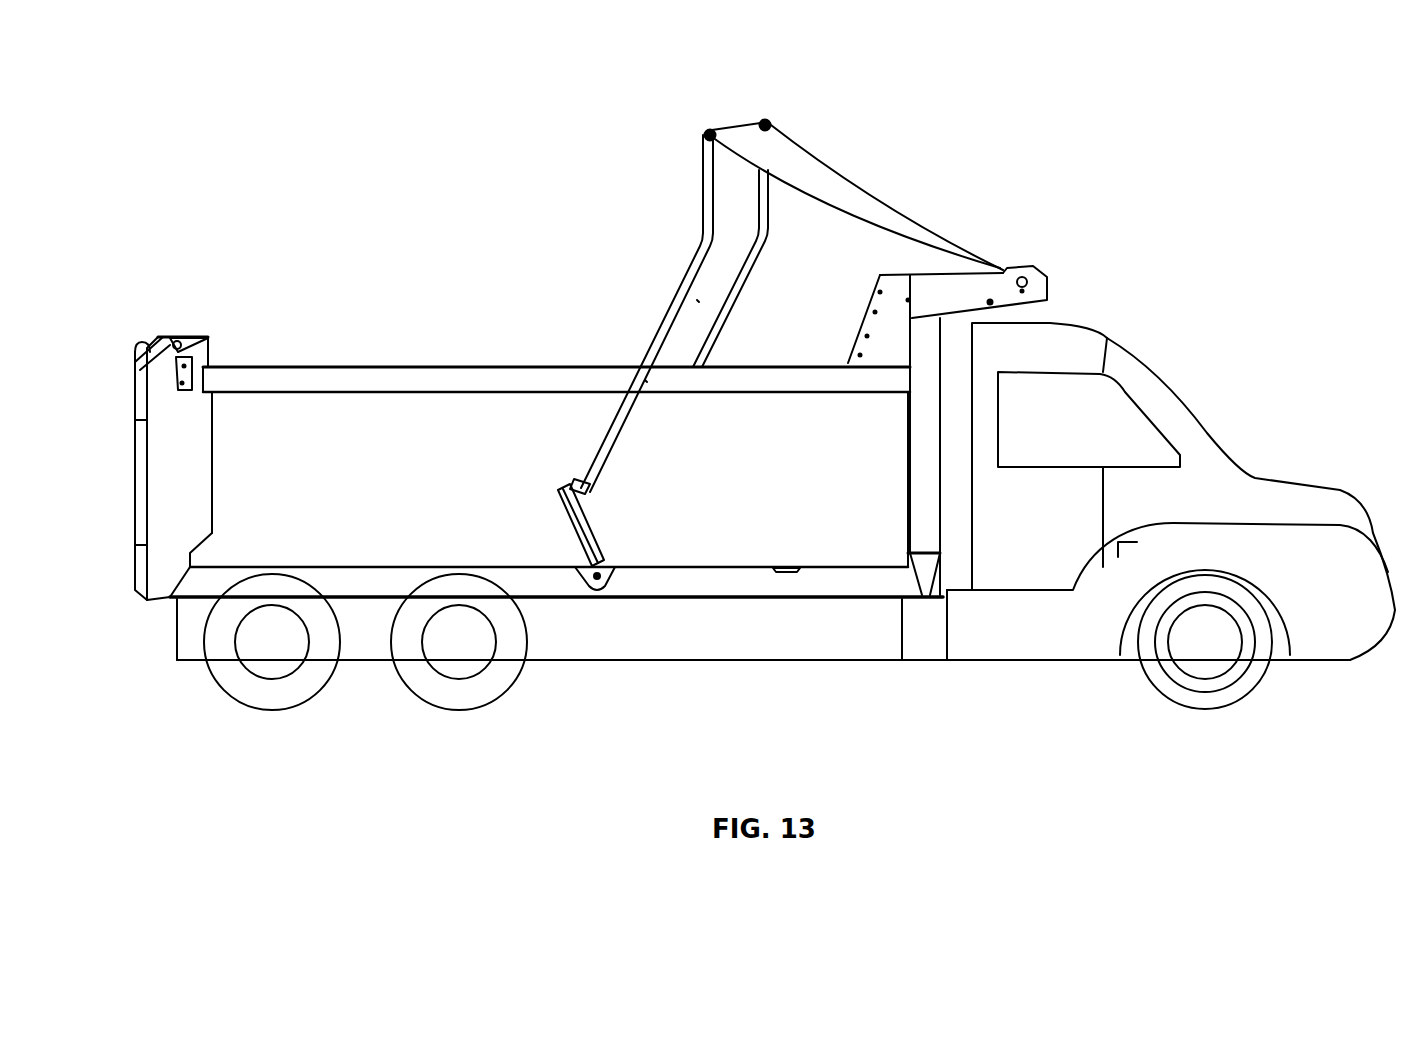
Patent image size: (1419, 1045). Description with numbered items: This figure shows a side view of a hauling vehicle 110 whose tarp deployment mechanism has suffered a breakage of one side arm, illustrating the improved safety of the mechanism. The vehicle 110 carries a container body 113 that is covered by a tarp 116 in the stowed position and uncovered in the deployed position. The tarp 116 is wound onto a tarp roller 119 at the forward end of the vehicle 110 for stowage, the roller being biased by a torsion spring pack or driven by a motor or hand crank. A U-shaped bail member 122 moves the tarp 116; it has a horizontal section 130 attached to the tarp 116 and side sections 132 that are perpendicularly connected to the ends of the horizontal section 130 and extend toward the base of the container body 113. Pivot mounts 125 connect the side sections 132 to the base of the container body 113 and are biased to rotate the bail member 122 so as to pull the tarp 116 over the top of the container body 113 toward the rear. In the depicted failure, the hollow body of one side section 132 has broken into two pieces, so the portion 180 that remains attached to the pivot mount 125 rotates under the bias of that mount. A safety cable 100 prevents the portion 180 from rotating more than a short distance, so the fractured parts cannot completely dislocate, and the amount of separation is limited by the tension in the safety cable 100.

The vehicle 110 is at (1263, 226).
The container body 113 is at (296, 366).
The tarp 116 is at (845, 193).
The tarp roller 119 is at (1020, 268).
The bail member 122 is at (690, 153).
The horizontal section 130 is at (740, 126).
The side section 132 is at (680, 282).
The safety cable 100 is at (577, 481).
The portion of the side section 180 is at (570, 522).
The pivot mount 125 is at (598, 580).